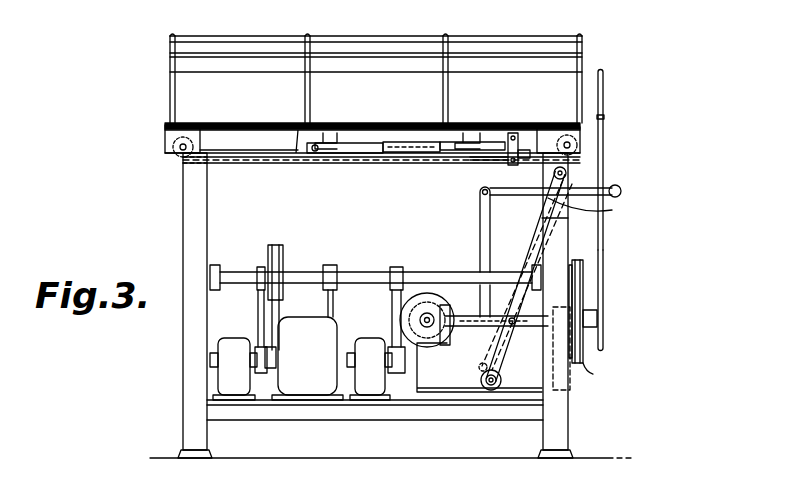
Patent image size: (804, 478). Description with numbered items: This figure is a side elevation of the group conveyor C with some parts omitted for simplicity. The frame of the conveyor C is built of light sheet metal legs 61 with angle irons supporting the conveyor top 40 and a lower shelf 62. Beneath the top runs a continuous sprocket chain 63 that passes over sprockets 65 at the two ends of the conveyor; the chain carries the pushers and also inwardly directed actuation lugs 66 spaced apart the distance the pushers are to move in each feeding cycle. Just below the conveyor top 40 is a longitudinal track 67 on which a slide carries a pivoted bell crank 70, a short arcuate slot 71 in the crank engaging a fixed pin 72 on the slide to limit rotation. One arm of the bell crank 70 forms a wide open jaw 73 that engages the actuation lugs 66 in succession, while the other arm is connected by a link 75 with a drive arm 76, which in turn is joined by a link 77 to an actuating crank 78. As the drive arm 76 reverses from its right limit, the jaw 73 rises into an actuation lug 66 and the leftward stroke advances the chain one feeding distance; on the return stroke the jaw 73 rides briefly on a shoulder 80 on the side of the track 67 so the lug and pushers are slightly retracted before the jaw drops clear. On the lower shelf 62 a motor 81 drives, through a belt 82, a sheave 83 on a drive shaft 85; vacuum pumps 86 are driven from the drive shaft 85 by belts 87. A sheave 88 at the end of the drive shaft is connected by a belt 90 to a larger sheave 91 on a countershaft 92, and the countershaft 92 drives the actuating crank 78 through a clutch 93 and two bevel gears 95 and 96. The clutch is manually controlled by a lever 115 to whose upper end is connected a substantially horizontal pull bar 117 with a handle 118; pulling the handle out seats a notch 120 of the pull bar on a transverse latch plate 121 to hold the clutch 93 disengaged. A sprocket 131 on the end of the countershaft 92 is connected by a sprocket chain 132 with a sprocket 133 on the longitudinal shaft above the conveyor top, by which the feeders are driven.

The conveyor top 40 is at (373, 81).
The sheet metal legs 61 is at (183, 236).
The lower shelf 62 is at (505, 405).
The sprocket chain 63 is at (226, 123).
The sprockets 65 is at (178, 156).
The actuation lugs 66 is at (335, 131).
The track 67 is at (402, 155).
The bell crank 70 is at (506, 161).
The arcuate slot 71 is at (511, 132).
The fixed pin 72 is at (519, 133).
The jaw 73 is at (453, 152).
The link 75 is at (553, 172).
The drive arm 76 is at (526, 246).
The link 77 is at (495, 314).
The actuating crank 78 is at (420, 270).
The shoulder 80 is at (320, 156).
The motor 81 is at (333, 316).
The belt 82 is at (286, 324).
The sheave 83 is at (278, 246).
The drive shaft 85 is at (228, 272).
The vacuum pumps 86 is at (232, 338).
The belts 87 is at (257, 290).
The sheave 88 is at (586, 267).
The belt 90 is at (587, 300).
The larger sheave 91 is at (598, 373).
The countershaft 92 is at (503, 345).
The clutch 93 is at (472, 314).
The bevel gear 95 is at (441, 294).
The bevel gear 96 is at (421, 294).
The lever 115 is at (480, 206).
The pull bar 117 is at (518, 197).
The handle 118 is at (618, 186).
The notch 120 is at (541, 221).
The latch plate 121 is at (596, 210).
The sprocket 131 is at (605, 304).
The sprocket chain 132 is at (604, 237).
The sprocket 133 is at (604, 100).
The group conveyor C is at (160, 146).